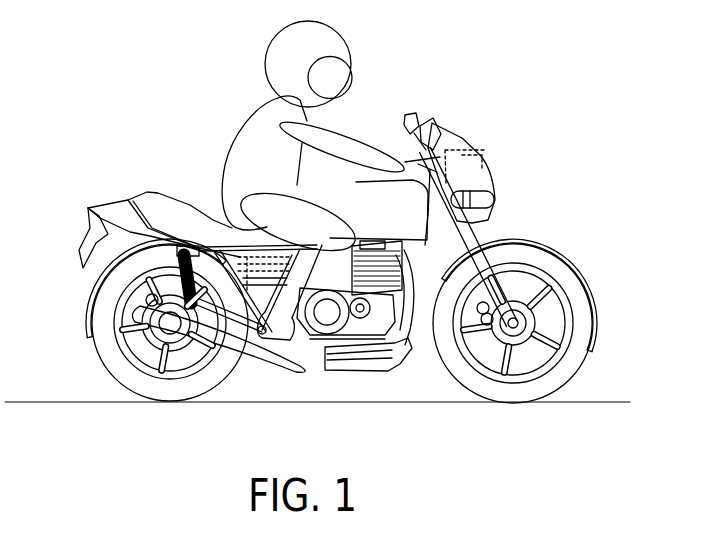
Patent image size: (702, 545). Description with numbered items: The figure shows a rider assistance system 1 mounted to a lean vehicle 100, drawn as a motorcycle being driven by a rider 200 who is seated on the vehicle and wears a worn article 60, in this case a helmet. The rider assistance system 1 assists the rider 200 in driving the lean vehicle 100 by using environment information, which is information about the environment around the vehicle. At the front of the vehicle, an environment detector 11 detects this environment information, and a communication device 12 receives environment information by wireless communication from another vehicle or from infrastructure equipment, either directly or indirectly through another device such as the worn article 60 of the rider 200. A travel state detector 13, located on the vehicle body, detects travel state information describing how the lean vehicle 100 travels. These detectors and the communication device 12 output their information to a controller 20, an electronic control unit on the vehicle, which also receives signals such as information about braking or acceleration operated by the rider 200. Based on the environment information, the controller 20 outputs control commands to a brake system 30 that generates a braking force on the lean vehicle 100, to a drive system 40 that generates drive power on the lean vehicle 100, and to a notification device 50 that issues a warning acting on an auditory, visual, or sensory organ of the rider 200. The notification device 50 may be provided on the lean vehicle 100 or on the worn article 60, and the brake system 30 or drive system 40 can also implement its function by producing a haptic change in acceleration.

The rider assistance system 1 is at (214, 51).
The lean vehicle 100 is at (572, 72).
The rider 200 is at (253, 155).
The worn article 60 is at (326, 48).
The notification device 50 is at (428, 145).
The communication device 12 is at (442, 150).
The environment detector 11 is at (472, 138).
The travel state detector 13 is at (240, 335).
The controller 20 is at (300, 345).
The brake system 30 is at (121, 323).
The drive system 40 is at (402, 355).